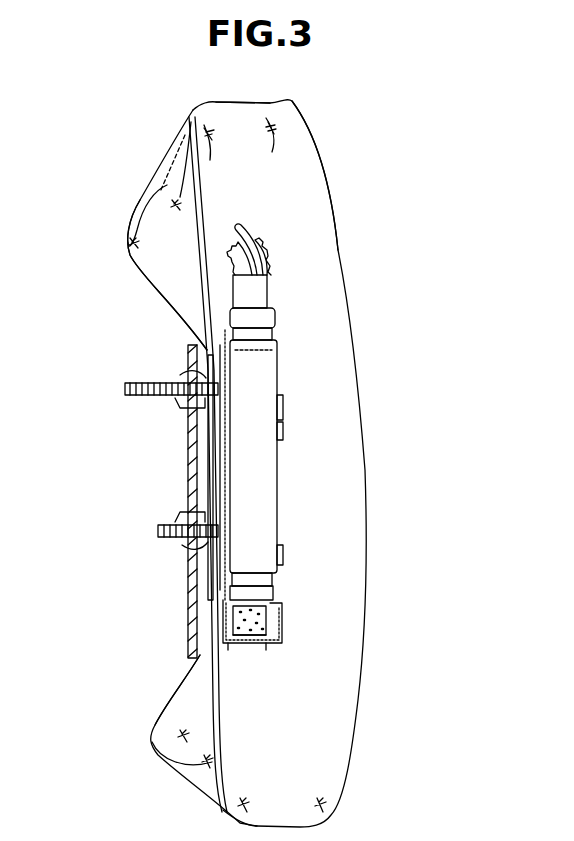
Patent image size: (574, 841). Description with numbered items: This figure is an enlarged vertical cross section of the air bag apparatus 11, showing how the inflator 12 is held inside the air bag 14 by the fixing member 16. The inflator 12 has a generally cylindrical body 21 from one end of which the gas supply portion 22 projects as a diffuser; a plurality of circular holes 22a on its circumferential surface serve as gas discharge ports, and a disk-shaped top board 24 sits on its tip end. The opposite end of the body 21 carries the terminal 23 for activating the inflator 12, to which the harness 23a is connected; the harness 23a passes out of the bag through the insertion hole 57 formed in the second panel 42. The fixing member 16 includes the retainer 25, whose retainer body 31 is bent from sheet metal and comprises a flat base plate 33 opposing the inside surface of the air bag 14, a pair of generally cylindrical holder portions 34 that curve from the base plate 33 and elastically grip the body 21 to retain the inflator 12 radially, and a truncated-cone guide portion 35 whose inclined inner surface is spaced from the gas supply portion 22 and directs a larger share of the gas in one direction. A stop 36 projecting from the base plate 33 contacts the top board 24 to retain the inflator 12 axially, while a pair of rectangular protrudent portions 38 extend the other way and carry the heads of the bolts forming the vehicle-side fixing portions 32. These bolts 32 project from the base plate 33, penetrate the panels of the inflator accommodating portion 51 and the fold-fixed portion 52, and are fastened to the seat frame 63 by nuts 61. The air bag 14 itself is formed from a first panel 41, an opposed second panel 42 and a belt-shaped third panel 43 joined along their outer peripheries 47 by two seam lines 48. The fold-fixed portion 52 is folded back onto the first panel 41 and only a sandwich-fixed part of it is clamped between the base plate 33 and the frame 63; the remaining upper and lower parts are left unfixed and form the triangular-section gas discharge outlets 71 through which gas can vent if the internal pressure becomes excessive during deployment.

The air bag apparatus 11 is at (246, 443).
The inflator 12 is at (255, 457).
The air bag 14 is at (360, 688).
The fixing member 16 is at (214, 444).
The body 21 is at (280, 496).
The gas supply portion 22 is at (282, 622).
The circular holes 22a is at (252, 640).
The terminal 23 is at (266, 298).
The harness 23a is at (258, 238).
The top board 24 is at (268, 645).
The retainer 25 is at (220, 478).
The retainer body 31 is at (283, 405).
The vehicle-side fixing portion 32 is at (146, 383).
The base plate 33 is at (205, 420).
The holder portions 34 is at (283, 428).
The guide portion 35 is at (283, 632).
The stop 36 is at (232, 645).
The protrudent portions 38 is at (183, 405).
The first panel 41 is at (185, 180).
The second panel 42 is at (328, 180).
The third panel 43 is at (237, 103).
The outer peripheries 47 is at (208, 140).
The seam lines 48 is at (208, 114).
The inflator accommodating portion 51 is at (295, 352).
The fold-fixed portion 52 is at (168, 302).
The insertion hole 57 is at (236, 230).
The nuts 61 is at (182, 375).
The frame 63 is at (190, 655).
The gas discharge outlets 71 is at (165, 272).